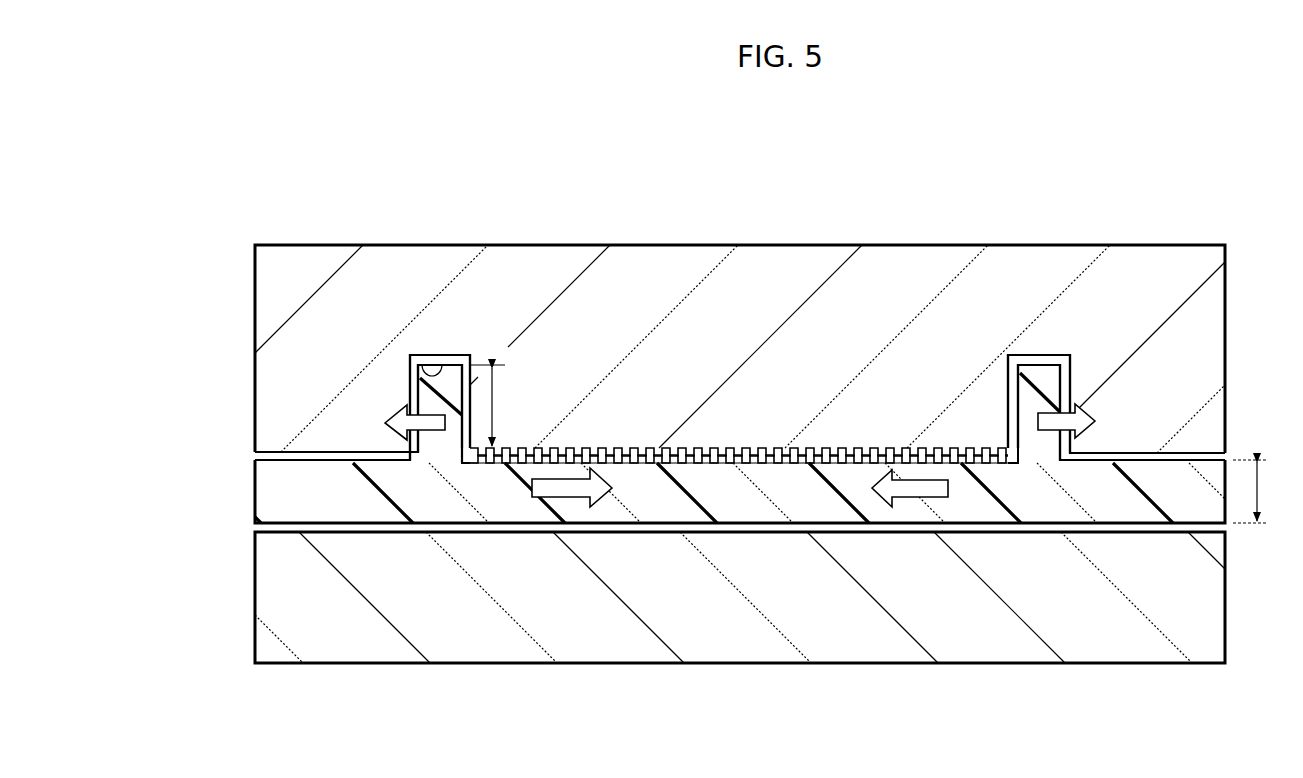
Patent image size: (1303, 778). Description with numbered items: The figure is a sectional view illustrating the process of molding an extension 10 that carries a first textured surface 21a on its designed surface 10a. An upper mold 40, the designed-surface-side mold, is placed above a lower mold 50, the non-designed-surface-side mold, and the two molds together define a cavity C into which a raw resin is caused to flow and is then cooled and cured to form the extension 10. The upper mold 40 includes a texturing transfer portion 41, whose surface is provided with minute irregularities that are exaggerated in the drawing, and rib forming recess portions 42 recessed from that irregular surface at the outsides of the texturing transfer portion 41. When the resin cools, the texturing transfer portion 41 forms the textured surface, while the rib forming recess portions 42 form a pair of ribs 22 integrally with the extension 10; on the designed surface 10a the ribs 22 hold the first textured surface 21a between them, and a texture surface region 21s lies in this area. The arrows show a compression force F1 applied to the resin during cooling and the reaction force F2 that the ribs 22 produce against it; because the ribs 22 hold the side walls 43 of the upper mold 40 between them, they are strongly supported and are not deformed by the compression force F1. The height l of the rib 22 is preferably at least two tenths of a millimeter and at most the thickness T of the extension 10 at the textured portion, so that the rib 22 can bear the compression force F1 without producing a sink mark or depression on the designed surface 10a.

The extension 10 is at (425, 490).
The designed surface 10a is at (540, 455).
The first textured surface 21a is at (660, 450).
The engaged portion of first member 21s is at (855, 455).
The rib 22 is at (1050, 382).
The upper mold 40 is at (280, 292).
The texturing transfer portion 41 is at (785, 450).
The rib forming recess portion 42 is at (413, 353).
The side wall 43 is at (1023, 383).
The lower mold 50 is at (327, 640).
The compression force F1 is at (902, 488).
The reaction force F2 is at (1015, 418).
The thickness of the extension T is at (1258, 491).
The height of the rib l is at (487, 405).
The cavity C is at (1037, 527).